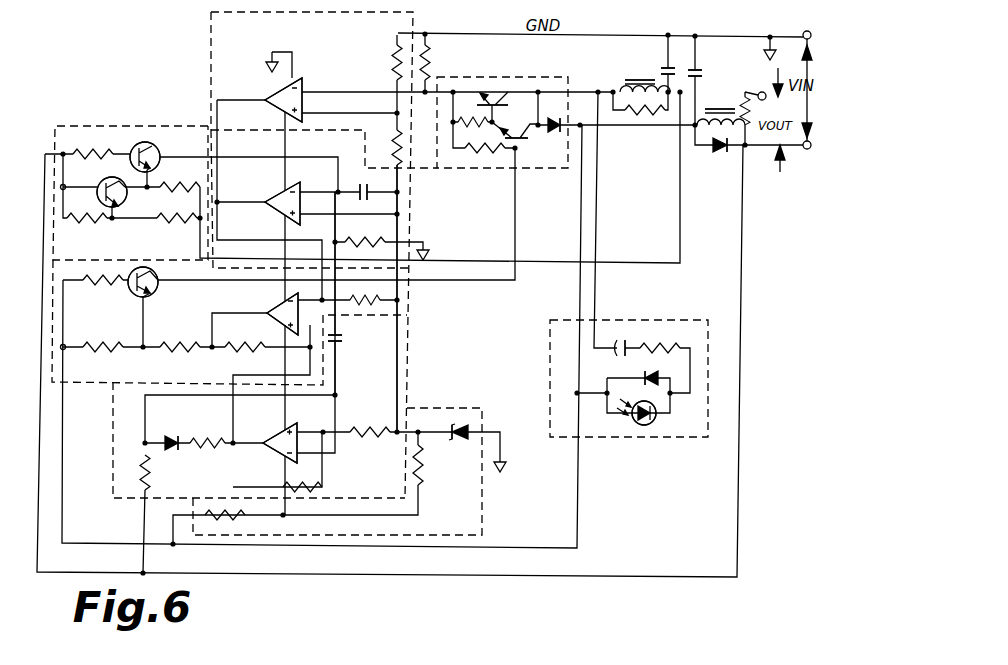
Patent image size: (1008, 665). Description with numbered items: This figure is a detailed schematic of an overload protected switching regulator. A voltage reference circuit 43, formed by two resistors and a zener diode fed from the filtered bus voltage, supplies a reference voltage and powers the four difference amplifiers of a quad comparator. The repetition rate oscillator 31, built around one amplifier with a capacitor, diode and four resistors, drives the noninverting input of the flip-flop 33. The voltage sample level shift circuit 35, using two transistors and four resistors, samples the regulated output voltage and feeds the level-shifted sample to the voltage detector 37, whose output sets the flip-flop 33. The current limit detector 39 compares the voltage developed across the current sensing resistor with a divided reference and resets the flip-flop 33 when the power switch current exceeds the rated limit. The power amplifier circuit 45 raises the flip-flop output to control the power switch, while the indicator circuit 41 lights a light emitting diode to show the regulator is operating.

The repetition rate oscillator 31 is at (378, 366).
The flip-flop 33 is at (405, 309).
The voltage sample level shift circuit 35 is at (107, 126).
The voltage detector 37 is at (228, 136).
The current limit detector 39 is at (211, 42).
The indicator circuit 41 is at (698, 430).
The voltage reference circuit 43 is at (482, 520).
The power amplifier circuit 45 is at (86, 378).